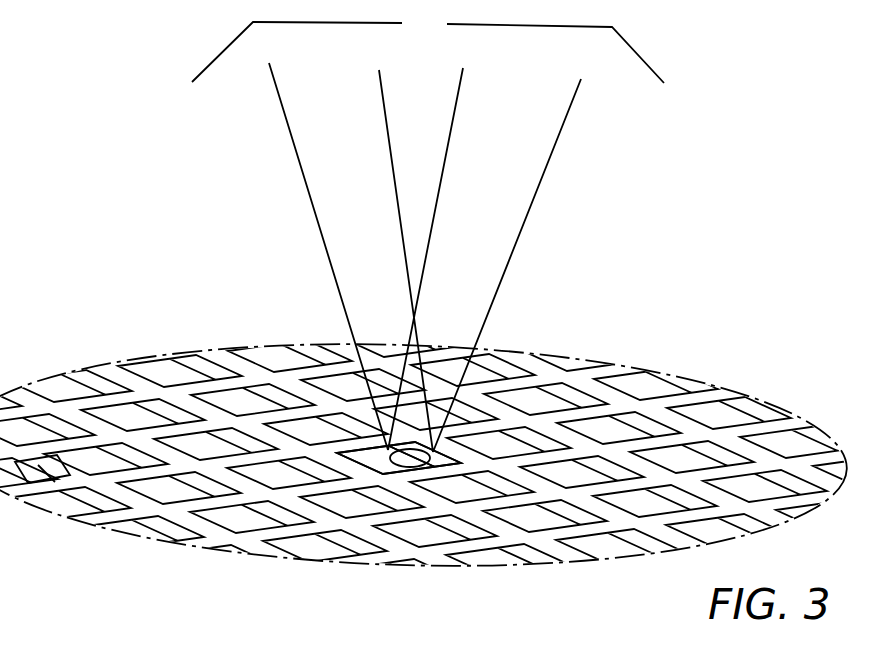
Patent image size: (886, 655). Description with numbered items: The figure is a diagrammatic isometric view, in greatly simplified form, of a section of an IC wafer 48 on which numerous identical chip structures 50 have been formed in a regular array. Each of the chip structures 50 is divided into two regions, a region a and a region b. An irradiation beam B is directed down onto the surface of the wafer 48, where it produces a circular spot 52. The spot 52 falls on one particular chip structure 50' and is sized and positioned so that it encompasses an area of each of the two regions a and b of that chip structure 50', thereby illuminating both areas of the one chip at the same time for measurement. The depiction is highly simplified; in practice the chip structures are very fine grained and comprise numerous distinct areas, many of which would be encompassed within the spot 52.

The IC wafer 48 is at (247, 566).
The chip structures 50 is at (443, 452).
The chip structure 50' is at (361, 382).
The circular spot 52 is at (428, 466).
The irradiation beam B is at (428, 228).
The region a is at (87, 380).
The region b is at (58, 392).